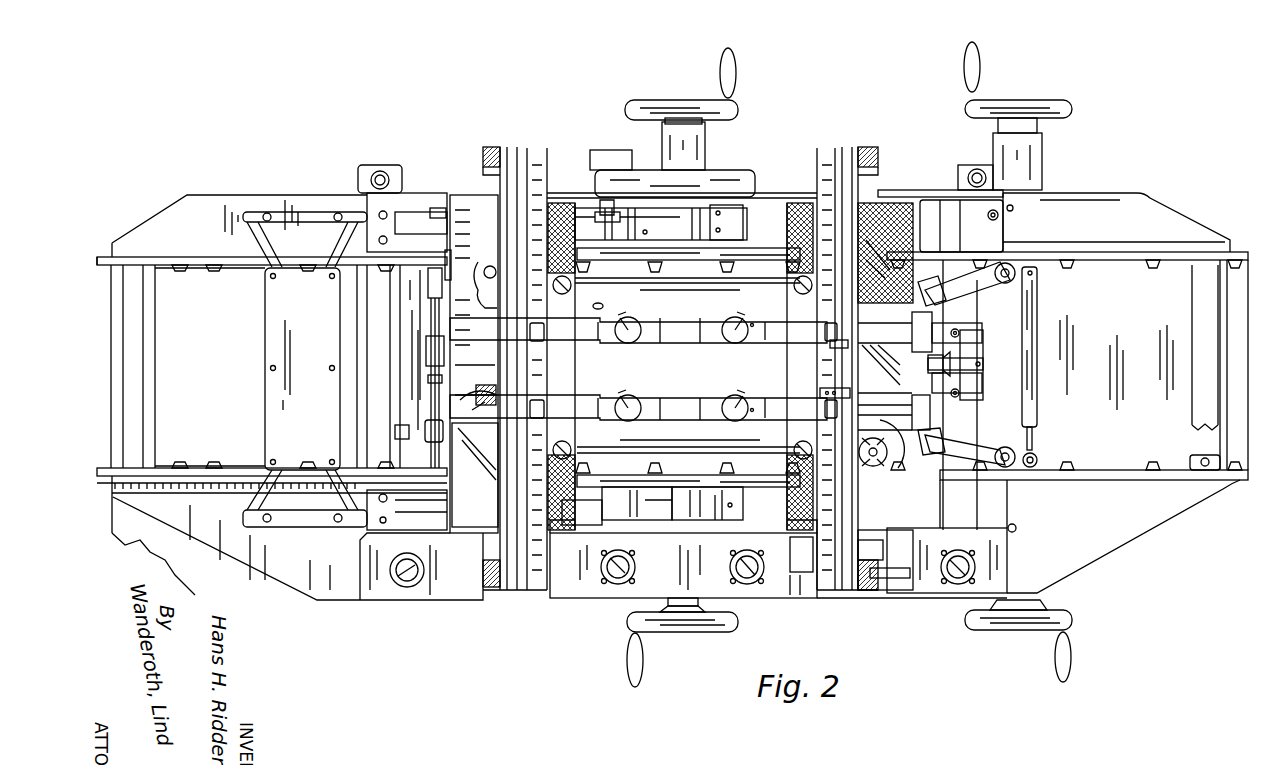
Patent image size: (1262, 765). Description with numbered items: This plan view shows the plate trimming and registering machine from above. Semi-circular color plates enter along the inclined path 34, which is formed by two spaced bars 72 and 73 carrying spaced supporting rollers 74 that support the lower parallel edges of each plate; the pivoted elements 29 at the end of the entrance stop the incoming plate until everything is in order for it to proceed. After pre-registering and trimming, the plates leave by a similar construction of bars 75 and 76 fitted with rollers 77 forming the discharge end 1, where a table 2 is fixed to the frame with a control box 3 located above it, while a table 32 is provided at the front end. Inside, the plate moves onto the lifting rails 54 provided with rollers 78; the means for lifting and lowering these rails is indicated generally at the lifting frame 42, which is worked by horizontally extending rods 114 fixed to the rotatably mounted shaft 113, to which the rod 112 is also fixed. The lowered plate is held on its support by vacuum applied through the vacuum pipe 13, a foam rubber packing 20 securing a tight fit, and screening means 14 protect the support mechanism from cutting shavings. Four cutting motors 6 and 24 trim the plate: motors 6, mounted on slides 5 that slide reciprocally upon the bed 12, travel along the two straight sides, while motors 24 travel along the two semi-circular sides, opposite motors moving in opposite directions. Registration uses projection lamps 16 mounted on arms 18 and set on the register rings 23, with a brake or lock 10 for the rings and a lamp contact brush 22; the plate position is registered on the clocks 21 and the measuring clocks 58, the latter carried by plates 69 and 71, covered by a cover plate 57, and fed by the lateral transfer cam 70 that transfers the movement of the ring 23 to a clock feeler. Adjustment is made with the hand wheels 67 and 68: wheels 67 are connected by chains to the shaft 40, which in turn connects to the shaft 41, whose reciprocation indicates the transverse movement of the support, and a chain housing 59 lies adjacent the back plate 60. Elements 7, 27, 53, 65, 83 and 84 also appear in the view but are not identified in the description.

The discharge end 1 is at (112, 372).
The table 2 is at (181, 361).
The control box 3 is at (305, 369).
The slides 5 is at (940, 400).
The cutting motors 6 is at (488, 268).
The cam follower segment 7 is at (494, 262).
The brake or lock 10 is at (568, 358).
The bed 12 is at (895, 371).
The vacuum pipe 13 is at (605, 306).
The screening or shielding means 14 is at (572, 202).
The projection lamps 16 is at (722, 330).
The arms 18 is at (600, 343).
The packing 20 is at (661, 226).
The clocks 21 is at (570, 280).
The lamp contact brush 22 is at (830, 336).
The register rings 23 is at (545, 150).
The cutting motors 24 is at (490, 445).
The adjusting rod 27 is at (985, 365).
The pivoted elements 29 is at (940, 285).
The table 32 is at (1095, 395).
The inclined path 34 is at (1220, 420).
The shaft 40 is at (612, 492).
The shaft 41 is at (610, 150).
The lifting frame 42 is at (735, 516).
The hatched block 53 is at (798, 200).
The lifting rails 54 is at (757, 255).
The cover plate 57 is at (812, 598).
The measuring clocks 58 is at (407, 585).
The chain housing 59 is at (648, 170).
The back plate 60 is at (420, 190).
The lower block 65 is at (870, 598).
The hand wheels 67 is at (665, 100).
The wheels 68 is at (1040, 100).
The plate 69 is at (365, 585).
The lateral transfer cam 70 is at (795, 545).
The plate 71 is at (968, 590).
The bar 72 is at (1103, 250).
The bar 73 is at (1236, 485).
The supporting rollers 74 is at (1235, 268).
The bar 75 is at (215, 258).
The bar 76 is at (195, 478).
The rollers 77 is at (180, 268).
The rollers 78 is at (752, 275).
The damper 83 is at (1037, 380).
The rod 84 is at (430, 285).
The rod 112 is at (395, 433).
The shaft 113 is at (408, 327).
The rods 114 is at (440, 515).